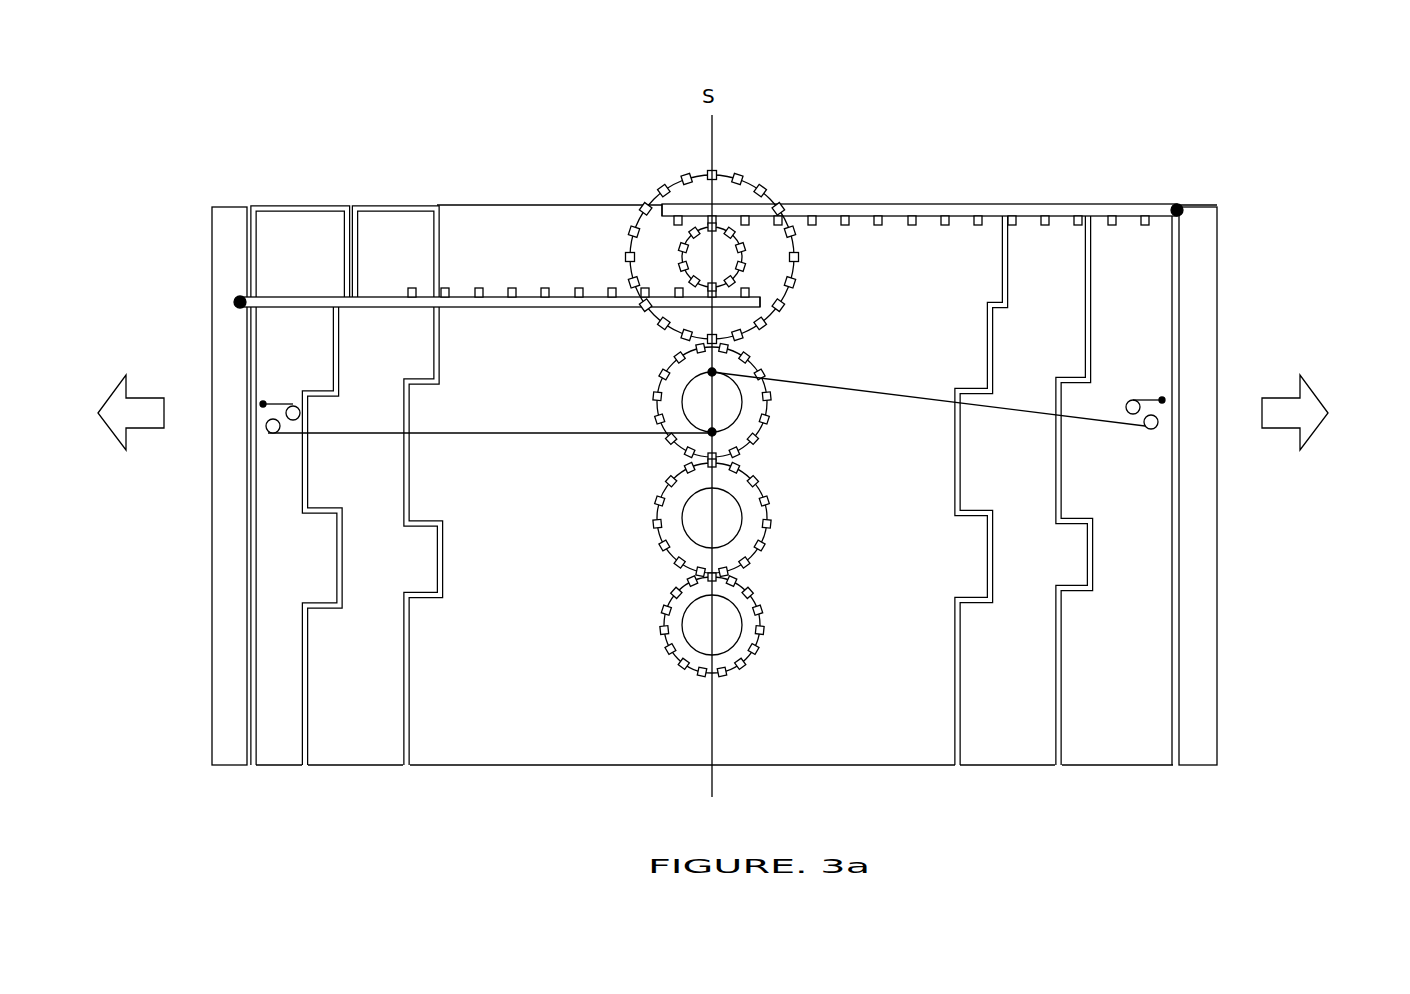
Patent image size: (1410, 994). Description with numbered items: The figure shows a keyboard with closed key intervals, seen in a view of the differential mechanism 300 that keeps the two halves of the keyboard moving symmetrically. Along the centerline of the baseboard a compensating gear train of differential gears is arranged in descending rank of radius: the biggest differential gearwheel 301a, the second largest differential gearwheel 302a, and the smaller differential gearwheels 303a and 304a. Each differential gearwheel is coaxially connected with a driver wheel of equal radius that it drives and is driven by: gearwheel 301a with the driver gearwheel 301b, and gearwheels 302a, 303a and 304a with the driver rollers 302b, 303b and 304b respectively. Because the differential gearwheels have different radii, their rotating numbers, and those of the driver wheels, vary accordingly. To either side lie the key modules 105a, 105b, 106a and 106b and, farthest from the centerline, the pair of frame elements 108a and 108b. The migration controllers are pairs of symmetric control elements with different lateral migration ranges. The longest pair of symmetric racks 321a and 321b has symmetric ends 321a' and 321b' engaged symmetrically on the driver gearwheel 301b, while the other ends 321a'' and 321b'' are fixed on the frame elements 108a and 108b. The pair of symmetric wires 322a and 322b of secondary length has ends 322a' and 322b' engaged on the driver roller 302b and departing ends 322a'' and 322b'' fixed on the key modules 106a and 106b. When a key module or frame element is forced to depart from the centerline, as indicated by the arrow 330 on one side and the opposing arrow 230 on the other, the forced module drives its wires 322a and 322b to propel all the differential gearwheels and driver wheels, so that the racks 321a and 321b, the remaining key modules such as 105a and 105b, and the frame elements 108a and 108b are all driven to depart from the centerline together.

The differential mechanism 300 is at (738, 134).
The differential gearwheel 301a is at (767, 187).
The driver gearwheel 301b is at (697, 262).
The differential gearwheel 302a is at (770, 426).
The driver roller 302b is at (697, 402).
The differential gearwheel 303a is at (765, 532).
The driver roller 303b is at (690, 530).
The differential gearwheel 304a is at (760, 636).
The driver roller 304b is at (692, 627).
The rack 321a is at (919, 198).
The symmetric end of rack 321a' is at (609, 170).
The symmetric end of rack 321a'' is at (1226, 192).
The rack 321b is at (500, 227).
The symmetric end of rack 321b' is at (813, 295).
The symmetric end of rack 321b'' is at (180, 284).
The wire 322a is at (935, 400).
The symmetric end of wire 322a' is at (777, 353).
The symmetric end of wire 322a'' is at (1140, 368).
The wire 322b is at (489, 415).
The symmetric end of wire 322b' is at (641, 456).
The symmetric end of wire 322b'' is at (291, 369).
The arrow 330 is at (113, 400).
The direction of movement right 230 is at (1322, 390).
The frame element 108b is at (212, 615).
The frame element 108a is at (1217, 615).
The key module 106b is at (277, 748).
The key module 105b is at (367, 748).
The key module 105a is at (1020, 748).
The key module 106a is at (1117, 748).